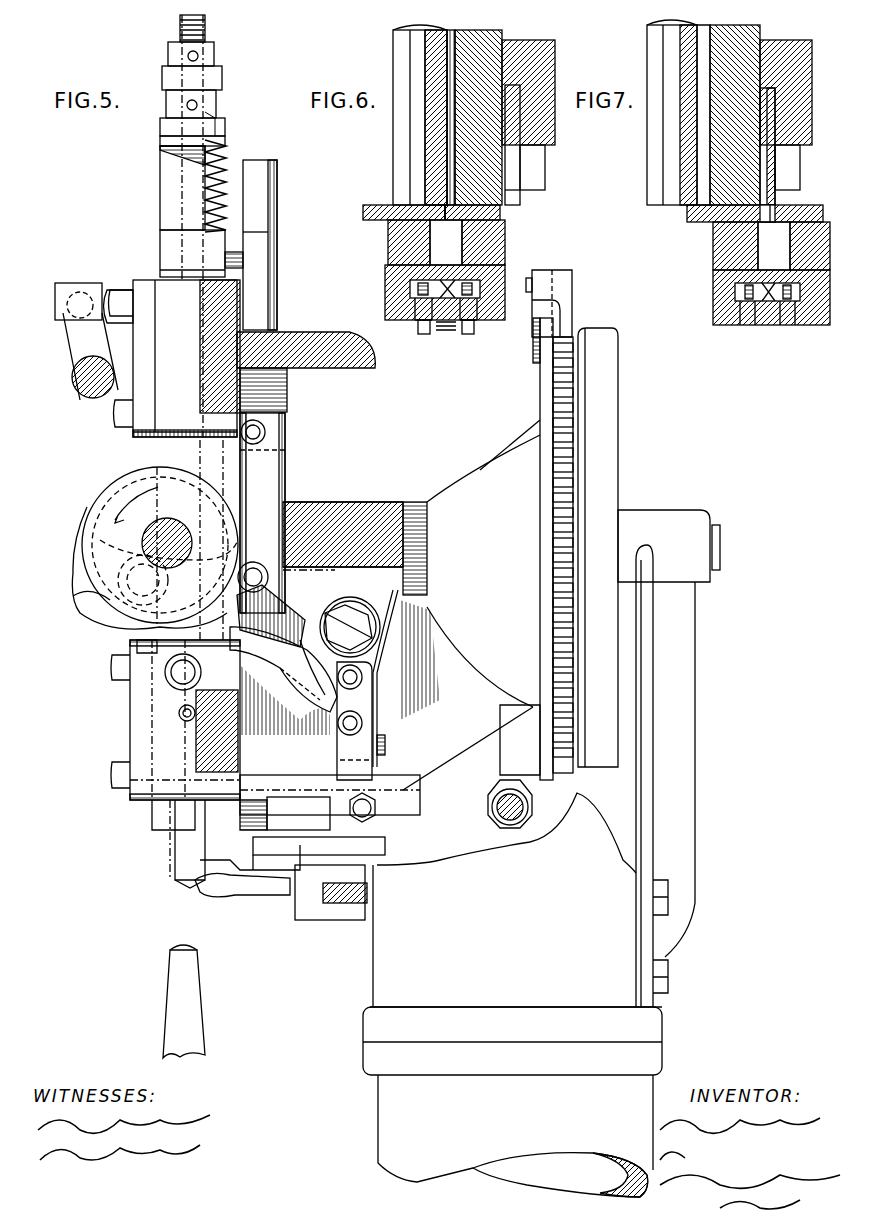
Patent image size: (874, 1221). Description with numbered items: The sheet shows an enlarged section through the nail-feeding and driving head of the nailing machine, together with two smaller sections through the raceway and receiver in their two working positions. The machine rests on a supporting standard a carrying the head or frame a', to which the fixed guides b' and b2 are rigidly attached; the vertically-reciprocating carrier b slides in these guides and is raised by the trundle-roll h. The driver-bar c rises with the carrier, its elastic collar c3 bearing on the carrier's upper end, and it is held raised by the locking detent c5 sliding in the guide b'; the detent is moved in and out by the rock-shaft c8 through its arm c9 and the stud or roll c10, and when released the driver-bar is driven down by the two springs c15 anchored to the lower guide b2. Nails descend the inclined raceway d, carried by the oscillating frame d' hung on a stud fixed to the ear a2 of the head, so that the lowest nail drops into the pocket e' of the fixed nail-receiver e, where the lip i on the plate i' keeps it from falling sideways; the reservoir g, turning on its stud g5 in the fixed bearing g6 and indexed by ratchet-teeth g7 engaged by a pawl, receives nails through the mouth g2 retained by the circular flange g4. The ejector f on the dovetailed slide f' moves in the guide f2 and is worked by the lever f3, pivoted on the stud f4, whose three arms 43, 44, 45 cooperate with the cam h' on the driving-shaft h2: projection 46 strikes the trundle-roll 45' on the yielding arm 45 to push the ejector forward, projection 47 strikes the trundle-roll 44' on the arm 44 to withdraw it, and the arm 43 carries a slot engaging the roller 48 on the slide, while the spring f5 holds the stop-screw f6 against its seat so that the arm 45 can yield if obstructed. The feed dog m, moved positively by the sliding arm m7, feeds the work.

In FIG. 5, the supporting standard a is at (512, 1102).
In FIG. 5, the head or frame a' is at (532, 783).
In FIG. 5, the arm or ear a2 is at (325, 505).
In FIG. 5, the vertically-reciprocating carrier b is at (185, 253).
In FIG. 6, the vertically-reciprocating carrier b is at (463, 277).
In FIG. 7, the vertically-reciprocating carrier b is at (752, 273).
In FIG. 5, the fixed guide b' is at (253, 313).
In FIG. 5, the lower fixed guide b2 is at (165, 742).
In FIG. 5, the driver-bar c is at (182, 184).
In FIG. 5, the washer or collar c3 is at (210, 140).
In FIG. 5, the locking pin or detent c5 is at (107, 290).
In FIG. 5, the rock-shaft c8 is at (80, 392).
In FIG. 5, the arm c9 is at (80, 343).
In FIG. 5, the stud or roll c10 is at (67, 290).
In FIG. 5, the springs c15 is at (225, 175).
In FIG. 6, the inclined chute or raceway d is at (403, 114).
In FIG. 7, the inclined chute or raceway d is at (656, 112).
In FIG. 5, the oscillating frame d' is at (471, 631).
In FIG. 6, the oscillating frame d' is at (513, 114).
In FIG. 7, the oscillating frame d' is at (766, 112).
In FIG. 5, the fixed nail-receiver e is at (285, 876).
In FIG. 6, the fixed nail-receiver e is at (417, 215).
In FIG. 7, the fixed nail-receiver e is at (739, 218).
In FIG. 6, the slot or pocket e' is at (403, 196).
In FIG. 7, the slot or pocket e' is at (787, 205).
In FIG. 5, the reciprocating ejector f is at (285, 813).
In FIG. 6, the reciprocating ejector f is at (539, 194).
In FIG. 7, the reciprocating ejector f is at (800, 146).
In FIG. 5, the dovetailed slide f' is at (340, 795).
In FIG. 6, the dovetailed slide f' is at (549, 134).
In FIG. 7, the dovetailed slide f' is at (796, 135).
In FIG. 5, the guide f2 is at (315, 850).
In FIG. 6, the guide f2 is at (538, 163).
In FIG. 7, the guide f2 is at (790, 158).
In FIG. 5, the lever f3 is at (340, 720).
In FIG. 5, the stud f4 is at (395, 615).
In FIG. 5, the spring f5 is at (400, 630).
In FIG. 5, the stop-screw f6 is at (300, 735).
In FIG. 5, the reservoir g is at (605, 430).
In FIG. 5, the mouth or receptacle g2 is at (488, 468).
In FIG. 5, the circular flange g4 is at (540, 495).
In FIG. 5, the stud g5 is at (722, 545).
In FIG. 5, the fixed bearing g6 is at (655, 520).
In FIG. 5, the ratchet-teeth g7 is at (563, 410).
In FIG. 5, the trundle-roll h is at (114, 662).
In FIG. 5, the cam h' is at (155, 539).
In FIG. 5, the driving-shaft h2 is at (168, 522).
In FIG. 5, the lip or flange i is at (158, 844).
In FIG. 5, the plate i' is at (147, 840).
In FIG. 5, the dog m is at (242, 897).
In FIG. 5, the sliding arm m7 is at (350, 905).
In FIG. 5, the lever arm 43 is at (355, 754).
In FIG. 5, the lever arm 44 is at (283, 681).
In FIG. 5, the trundle-roll 44' is at (150, 681).
In FIG. 5, the lever arm 45 is at (309, 586).
In FIG. 5, the trundle-roll 45' is at (261, 548).
In FIG. 5, the cam projection 46 is at (271, 616).
In FIG. 5, the cam projection 47 is at (80, 596).
In FIG. 5, the stud or roller 48 is at (363, 825).